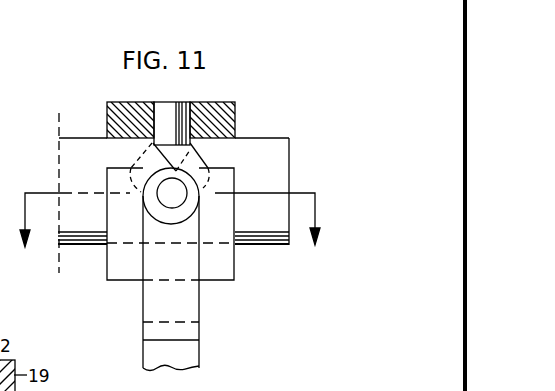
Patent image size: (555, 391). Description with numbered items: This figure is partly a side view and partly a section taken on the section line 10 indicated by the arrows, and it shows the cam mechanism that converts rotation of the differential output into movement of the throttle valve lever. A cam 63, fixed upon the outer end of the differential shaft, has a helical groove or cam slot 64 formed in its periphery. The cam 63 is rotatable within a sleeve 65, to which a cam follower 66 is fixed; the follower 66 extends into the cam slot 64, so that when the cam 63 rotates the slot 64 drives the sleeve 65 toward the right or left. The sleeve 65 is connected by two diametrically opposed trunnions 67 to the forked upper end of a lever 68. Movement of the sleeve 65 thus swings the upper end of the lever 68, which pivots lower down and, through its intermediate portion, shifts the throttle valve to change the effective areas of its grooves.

The section line indicator 10 is at (170, 234).
The cam 63 is at (282, 158).
The cam slot 64 is at (188, 161).
The sleeve 65 is at (223, 260).
The cam follower 66 is at (168, 108).
The trunnions 67 is at (178, 192).
The lever 68 is at (157, 330).